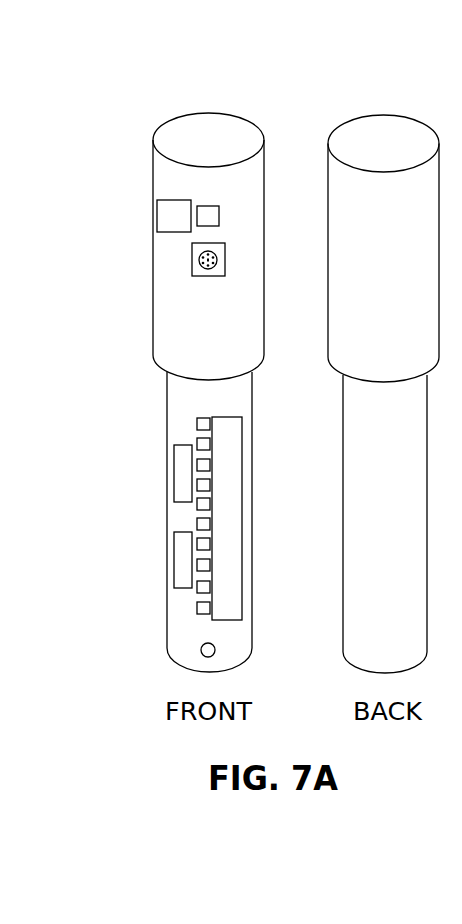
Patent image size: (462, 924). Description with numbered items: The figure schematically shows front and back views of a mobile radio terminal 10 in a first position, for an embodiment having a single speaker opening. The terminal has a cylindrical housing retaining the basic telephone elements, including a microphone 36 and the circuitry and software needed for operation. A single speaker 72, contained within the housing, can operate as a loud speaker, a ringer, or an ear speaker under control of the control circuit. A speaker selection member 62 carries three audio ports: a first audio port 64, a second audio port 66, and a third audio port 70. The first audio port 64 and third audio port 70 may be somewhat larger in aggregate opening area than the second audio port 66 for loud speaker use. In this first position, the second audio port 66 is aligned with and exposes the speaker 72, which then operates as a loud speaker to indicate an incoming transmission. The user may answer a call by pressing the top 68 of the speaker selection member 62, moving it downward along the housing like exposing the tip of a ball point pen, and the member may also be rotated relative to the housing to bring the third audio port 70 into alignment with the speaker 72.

The mobile radio terminal 10 is at (141, 93).
The microphone 36 is at (201, 647).
The speaker selection member 62 is at (358, 203).
The first audio port 64 is at (192, 265).
The second audio port 66 is at (207, 205).
The top 68 is at (367, 128).
The third audio port 70 is at (157, 213).
The speaker 72 is at (199, 260).